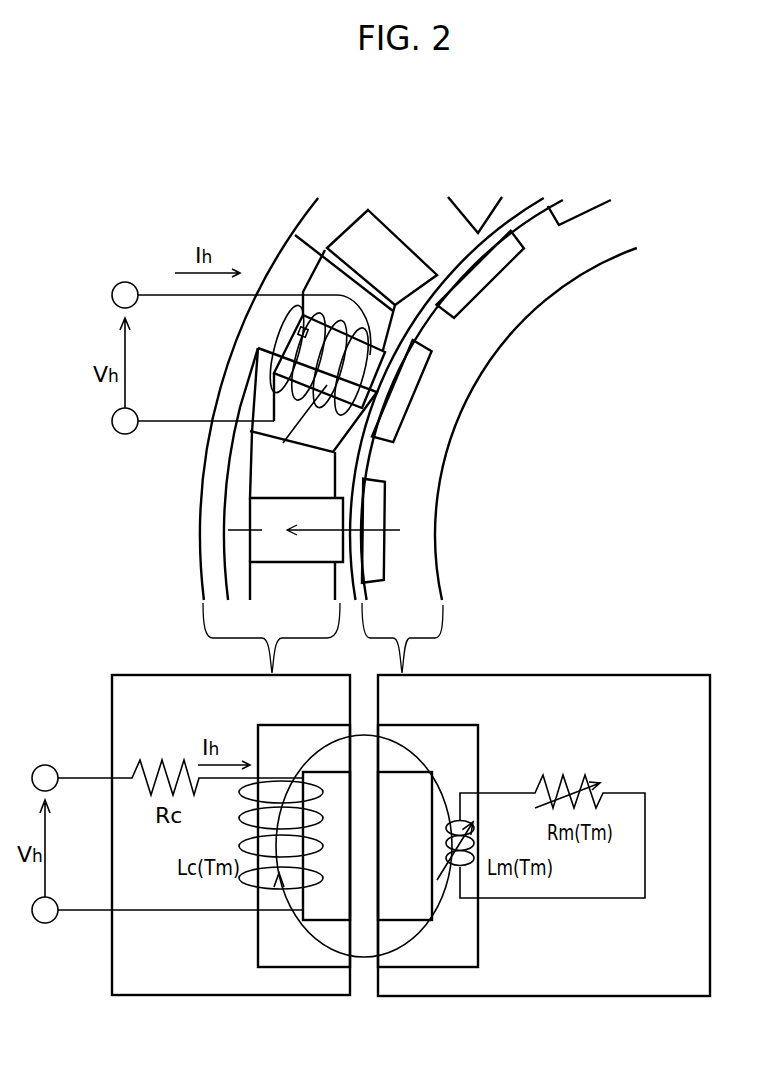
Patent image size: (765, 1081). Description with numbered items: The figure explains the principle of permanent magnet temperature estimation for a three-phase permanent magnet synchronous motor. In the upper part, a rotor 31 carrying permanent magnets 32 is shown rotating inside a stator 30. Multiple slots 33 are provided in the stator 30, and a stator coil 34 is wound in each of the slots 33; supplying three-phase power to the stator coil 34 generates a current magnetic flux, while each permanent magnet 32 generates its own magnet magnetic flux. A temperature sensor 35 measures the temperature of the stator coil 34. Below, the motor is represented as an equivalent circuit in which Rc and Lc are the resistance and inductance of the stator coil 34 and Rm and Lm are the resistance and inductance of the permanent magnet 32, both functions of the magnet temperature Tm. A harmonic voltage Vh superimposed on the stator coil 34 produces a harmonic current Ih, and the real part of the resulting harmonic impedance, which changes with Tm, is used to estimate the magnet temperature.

The stator 30 is at (418, 218).
The rotor 31 is at (618, 223).
The permanent magnet 32 is at (487, 270).
The slot 33 is at (372, 247).
The stator coil 34 is at (283, 443).
The temperature sensor 35 is at (298, 333).